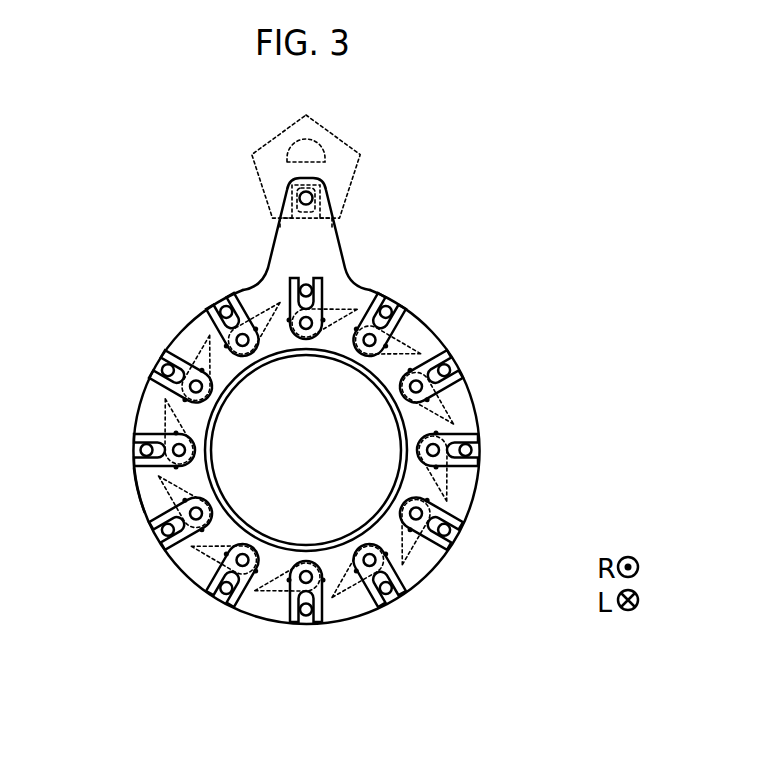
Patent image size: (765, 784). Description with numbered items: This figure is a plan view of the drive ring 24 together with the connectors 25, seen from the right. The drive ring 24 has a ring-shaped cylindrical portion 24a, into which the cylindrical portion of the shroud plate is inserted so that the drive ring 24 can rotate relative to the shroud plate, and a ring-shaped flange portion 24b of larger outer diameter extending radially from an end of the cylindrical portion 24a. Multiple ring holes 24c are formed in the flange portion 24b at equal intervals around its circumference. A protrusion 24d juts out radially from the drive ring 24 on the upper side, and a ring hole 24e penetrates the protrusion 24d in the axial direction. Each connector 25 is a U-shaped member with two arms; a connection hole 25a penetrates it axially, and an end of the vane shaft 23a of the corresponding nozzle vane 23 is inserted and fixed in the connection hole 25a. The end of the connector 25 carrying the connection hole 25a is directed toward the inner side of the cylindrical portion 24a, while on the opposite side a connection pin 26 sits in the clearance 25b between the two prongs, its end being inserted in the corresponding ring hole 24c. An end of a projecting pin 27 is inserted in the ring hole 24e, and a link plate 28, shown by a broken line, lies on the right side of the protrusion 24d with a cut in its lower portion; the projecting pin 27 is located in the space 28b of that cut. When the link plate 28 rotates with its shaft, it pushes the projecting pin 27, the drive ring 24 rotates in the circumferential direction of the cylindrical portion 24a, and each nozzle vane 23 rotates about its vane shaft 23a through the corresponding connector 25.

The nozzle vane 23 is at (167, 398).
The vane shaft 23a is at (418, 542).
The drive ring 24 is at (329, 422).
The cylindrical portion 24a is at (408, 427).
The flange portion 24b is at (153, 488).
The ring hole 24c is at (388, 592).
The protrusion 24d is at (333, 210).
The ring hole 24e is at (298, 196).
The connector 25 is at (306, 476).
The connection hole 25a is at (290, 622).
The clearance 25b is at (215, 595).
The connection pin 26 is at (408, 577).
The projecting pin 27 is at (280, 222).
The link plate 28 is at (352, 142).
The space 28b is at (315, 228).